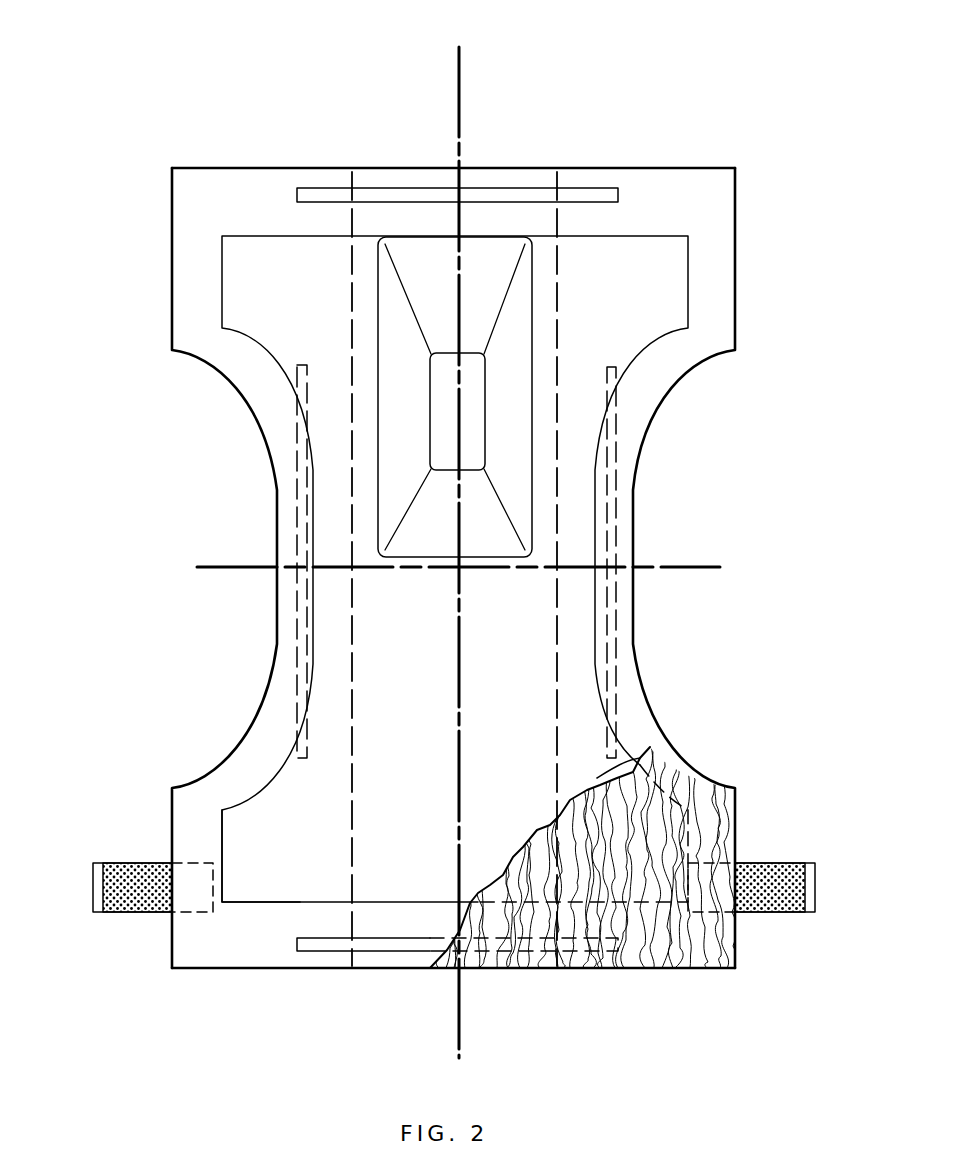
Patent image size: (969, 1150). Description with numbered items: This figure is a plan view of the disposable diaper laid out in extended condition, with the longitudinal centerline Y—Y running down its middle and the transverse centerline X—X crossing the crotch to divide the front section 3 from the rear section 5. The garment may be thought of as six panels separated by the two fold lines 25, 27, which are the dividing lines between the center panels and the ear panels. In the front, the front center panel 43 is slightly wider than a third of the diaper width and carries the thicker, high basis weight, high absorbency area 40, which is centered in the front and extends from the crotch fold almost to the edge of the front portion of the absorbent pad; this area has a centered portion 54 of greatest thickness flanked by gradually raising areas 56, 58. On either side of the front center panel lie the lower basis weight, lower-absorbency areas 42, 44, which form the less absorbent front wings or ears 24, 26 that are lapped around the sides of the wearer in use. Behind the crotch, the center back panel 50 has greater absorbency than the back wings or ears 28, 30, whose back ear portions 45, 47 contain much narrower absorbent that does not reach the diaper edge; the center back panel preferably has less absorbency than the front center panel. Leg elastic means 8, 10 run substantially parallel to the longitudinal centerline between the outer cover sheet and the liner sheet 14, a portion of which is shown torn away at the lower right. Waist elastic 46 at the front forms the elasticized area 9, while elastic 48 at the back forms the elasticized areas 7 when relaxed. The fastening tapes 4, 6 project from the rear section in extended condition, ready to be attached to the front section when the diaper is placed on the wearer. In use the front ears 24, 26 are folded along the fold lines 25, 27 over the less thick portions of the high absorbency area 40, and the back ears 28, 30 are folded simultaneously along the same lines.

The front section 3 is at (508, 31).
The rear section 5 is at (547, 1000).
The elasticized area 9 is at (425, 170).
The elasticized areas 7 is at (410, 975).
The wing or ear 24 is at (172, 275).
The wing or ear 26 is at (735, 275).
The wing or ear 28 is at (172, 810).
The wing or ear 30 is at (737, 813).
The lower-absorbency area 42 is at (255, 250).
The lower-absorbency area 44 is at (648, 262).
The front center panel 43 is at (541, 257).
The fold line 25 is at (353, 490).
The fold line 27 is at (557, 490).
The leg elastic means 8 is at (303, 638).
The leg elastic means 10 is at (612, 645).
The waist elastic 46 is at (337, 192).
The elastic 48 is at (333, 945).
The high absorbency area 40 is at (510, 355).
The centered portion 54 is at (472, 392).
The gradually raising area 56 is at (455, 299).
The gradually raising area 58 is at (455, 509).
The fastening tape 6 is at (123, 875).
The fastening tape 4 is at (775, 885).
The liner sheet 14 is at (583, 853).
The back ear portion 47 is at (597, 778).
The back ear portion 45 is at (265, 868).
The center back panel 50 is at (418, 888).